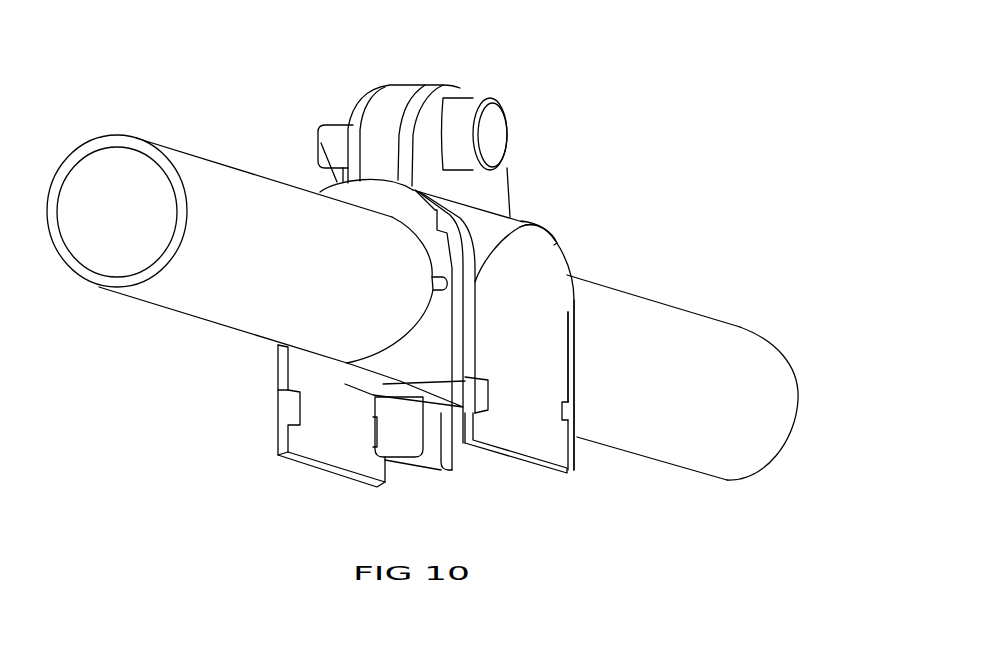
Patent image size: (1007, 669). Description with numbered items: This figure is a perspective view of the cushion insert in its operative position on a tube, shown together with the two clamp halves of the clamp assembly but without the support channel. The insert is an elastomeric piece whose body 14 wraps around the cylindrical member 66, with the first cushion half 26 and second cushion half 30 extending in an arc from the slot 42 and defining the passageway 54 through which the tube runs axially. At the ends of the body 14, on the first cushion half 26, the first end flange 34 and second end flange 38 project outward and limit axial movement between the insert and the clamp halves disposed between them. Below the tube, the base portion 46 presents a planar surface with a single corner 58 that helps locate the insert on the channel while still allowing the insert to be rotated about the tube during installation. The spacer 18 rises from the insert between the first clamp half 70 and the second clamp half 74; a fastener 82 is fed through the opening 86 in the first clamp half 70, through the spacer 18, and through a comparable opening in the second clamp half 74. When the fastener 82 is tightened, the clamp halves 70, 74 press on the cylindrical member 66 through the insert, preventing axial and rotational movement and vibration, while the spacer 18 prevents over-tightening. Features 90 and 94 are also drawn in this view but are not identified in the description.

The body 14 is at (436, 243).
The spacer 18 is at (403, 97).
The first cushion half 26 is at (334, 192).
The second cushion half 30 is at (309, 360).
The first end flange 34 is at (318, 140).
The second end flange 38 is at (554, 243).
The slot 42 is at (527, 222).
The base portion 46 is at (433, 358).
The passageway 54 is at (338, 371).
The corner 58 is at (474, 417).
The cylindrical member 66 is at (713, 343).
The first clamp half 70 is at (547, 278).
The second clamp half 74 is at (382, 90).
The fastener 82 is at (493, 135).
The opening 86 is at (452, 97).
The base plate 90 is at (497, 455).
The slot 94 is at (437, 447).